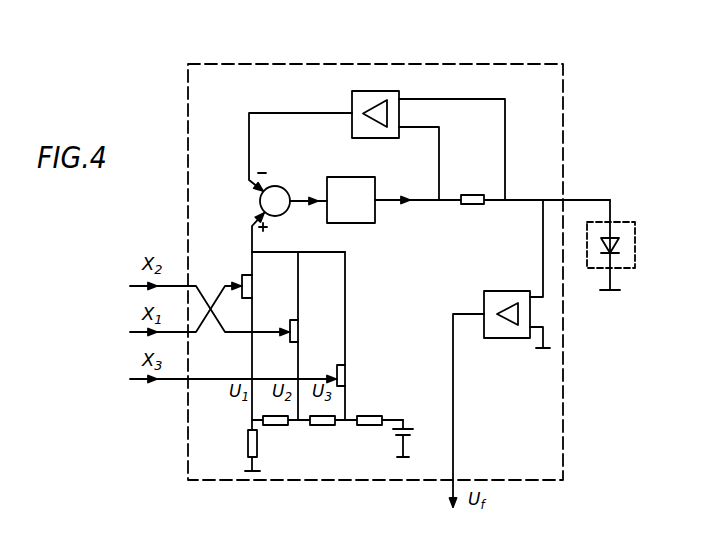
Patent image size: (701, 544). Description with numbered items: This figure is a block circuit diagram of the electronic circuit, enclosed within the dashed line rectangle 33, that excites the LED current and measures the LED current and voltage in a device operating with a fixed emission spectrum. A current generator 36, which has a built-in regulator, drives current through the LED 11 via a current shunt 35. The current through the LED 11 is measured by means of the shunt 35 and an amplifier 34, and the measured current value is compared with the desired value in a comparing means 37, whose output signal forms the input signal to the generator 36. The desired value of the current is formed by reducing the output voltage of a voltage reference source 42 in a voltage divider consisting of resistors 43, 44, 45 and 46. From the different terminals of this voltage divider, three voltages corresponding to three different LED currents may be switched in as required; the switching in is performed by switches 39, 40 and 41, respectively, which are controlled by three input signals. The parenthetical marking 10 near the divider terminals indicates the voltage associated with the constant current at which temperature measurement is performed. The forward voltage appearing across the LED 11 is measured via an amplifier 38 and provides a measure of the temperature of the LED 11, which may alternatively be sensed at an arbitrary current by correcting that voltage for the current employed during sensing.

The dashed line rectangle 33 is at (532, 61).
The amplifier 34 is at (399, 92).
The current shunt 35 is at (472, 194).
The current generator 36 is at (360, 176).
The comparing means 37 is at (286, 189).
The amplifier 38 is at (494, 290).
The switch 39 is at (254, 287).
The switch 40 is at (302, 331).
The switch 41 is at (348, 377).
The voltage reference source 42 is at (413, 438).
The resistor 43 is at (372, 414).
The resistor 44 is at (323, 427).
The resistor 45 is at (272, 427).
The resistor 46 is at (247, 444).
The LED 11 is at (612, 238).
The reference element 10 is at (290, 408).